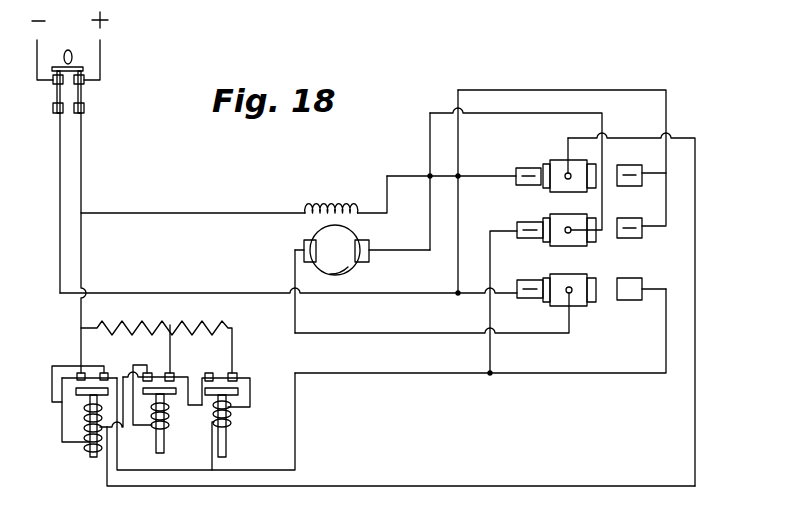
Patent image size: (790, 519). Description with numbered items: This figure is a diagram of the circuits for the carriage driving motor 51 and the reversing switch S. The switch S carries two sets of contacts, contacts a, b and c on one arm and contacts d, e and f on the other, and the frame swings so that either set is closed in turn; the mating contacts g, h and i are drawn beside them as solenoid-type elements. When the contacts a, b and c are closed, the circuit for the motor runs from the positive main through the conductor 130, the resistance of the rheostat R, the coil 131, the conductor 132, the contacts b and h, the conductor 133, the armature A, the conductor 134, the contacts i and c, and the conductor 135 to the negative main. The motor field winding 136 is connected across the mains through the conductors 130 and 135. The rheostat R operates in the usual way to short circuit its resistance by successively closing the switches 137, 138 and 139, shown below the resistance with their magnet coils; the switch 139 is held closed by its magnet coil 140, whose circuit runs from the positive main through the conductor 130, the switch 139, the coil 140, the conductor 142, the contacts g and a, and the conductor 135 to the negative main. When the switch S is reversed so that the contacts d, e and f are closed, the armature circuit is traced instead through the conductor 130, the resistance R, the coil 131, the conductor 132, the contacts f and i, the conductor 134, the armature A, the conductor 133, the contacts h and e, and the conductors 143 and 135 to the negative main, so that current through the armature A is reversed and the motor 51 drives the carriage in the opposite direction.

The conductor 130 is at (81, 155).
The coil 131 is at (230, 413).
The conductor 132 is at (452, 366).
The conductor 133 is at (430, 113).
The conductor 134 is at (397, 333).
The conductor 135 is at (243, 293).
The motor field winding 136 is at (331, 206).
The switch 137 is at (236, 373).
The switch 138 is at (174, 382).
The switch 139 is at (90, 372).
The magnet coil 140 is at (92, 409).
The conductor 142 is at (487, 486).
The conductor 143 is at (666, 110).
The motor 51 is at (352, 268).
The armature A is at (348, 246).
The rheostat R is at (172, 322).
The reversing switch S is at (680, 253).
The contact a is at (528, 168).
The contact b is at (528, 222).
The contact c is at (528, 280).
The contact d is at (632, 162).
The contact e is at (630, 218).
The contact f is at (631, 275).
The contact g is at (563, 160).
The contact h is at (568, 215).
The contact i is at (569, 274).